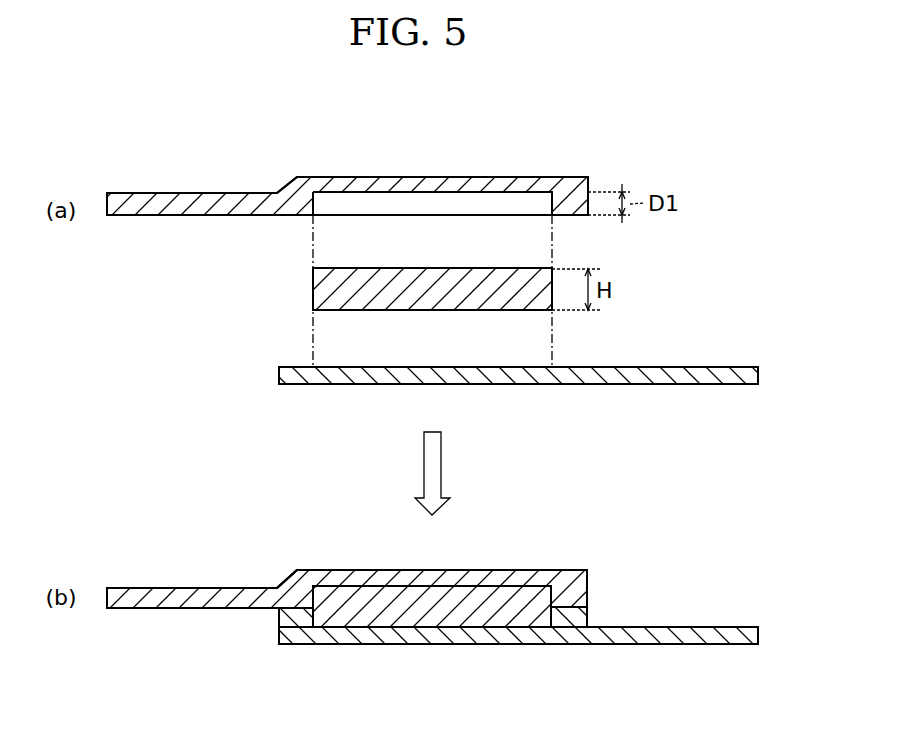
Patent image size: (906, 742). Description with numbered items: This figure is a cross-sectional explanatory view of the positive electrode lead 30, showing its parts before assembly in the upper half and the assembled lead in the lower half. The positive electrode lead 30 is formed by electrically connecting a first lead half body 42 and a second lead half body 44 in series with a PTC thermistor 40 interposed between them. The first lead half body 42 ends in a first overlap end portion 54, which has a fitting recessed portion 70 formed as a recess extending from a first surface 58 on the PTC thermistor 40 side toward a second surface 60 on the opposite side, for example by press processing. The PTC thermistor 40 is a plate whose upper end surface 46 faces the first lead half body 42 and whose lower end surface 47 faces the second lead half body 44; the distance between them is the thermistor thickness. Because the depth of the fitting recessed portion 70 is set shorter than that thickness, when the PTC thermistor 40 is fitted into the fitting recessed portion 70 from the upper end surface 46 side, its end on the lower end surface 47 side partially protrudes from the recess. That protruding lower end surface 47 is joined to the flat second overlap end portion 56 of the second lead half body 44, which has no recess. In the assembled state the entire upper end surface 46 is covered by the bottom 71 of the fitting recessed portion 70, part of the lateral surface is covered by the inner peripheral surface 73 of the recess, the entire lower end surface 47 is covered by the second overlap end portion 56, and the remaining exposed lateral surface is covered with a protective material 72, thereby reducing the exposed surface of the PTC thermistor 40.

The positive electrode lead 30 is at (598, 560).
The PTC thermistor 40 is at (313, 290).
The first lead half body 42 is at (167, 193).
The second lead half body 44 is at (690, 385).
The upper end surface 46 is at (410, 268).
The lower end surface 47 is at (491, 311).
The first overlap end portion 54 is at (570, 177).
The second overlap end portion 56 is at (378, 385).
The first surface 58 is at (228, 216).
The second surface 60 is at (344, 177).
The fitting recessed portion 70 is at (371, 194).
The bottom 71 is at (468, 193).
The protective material 72 is at (295, 617).
The inner peripheral surface 73 is at (550, 197).